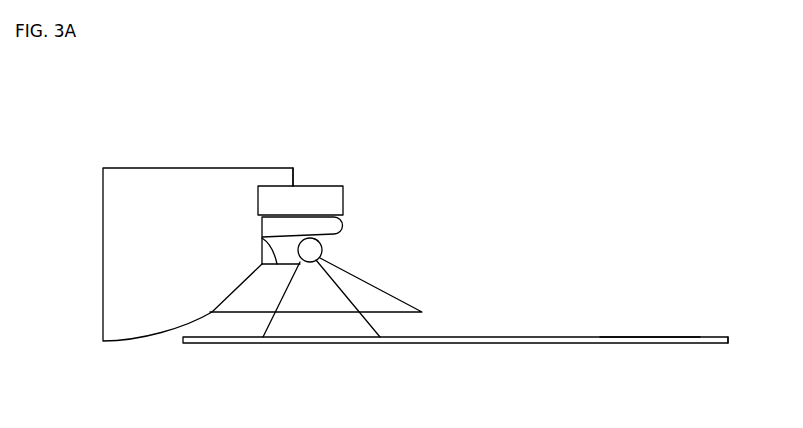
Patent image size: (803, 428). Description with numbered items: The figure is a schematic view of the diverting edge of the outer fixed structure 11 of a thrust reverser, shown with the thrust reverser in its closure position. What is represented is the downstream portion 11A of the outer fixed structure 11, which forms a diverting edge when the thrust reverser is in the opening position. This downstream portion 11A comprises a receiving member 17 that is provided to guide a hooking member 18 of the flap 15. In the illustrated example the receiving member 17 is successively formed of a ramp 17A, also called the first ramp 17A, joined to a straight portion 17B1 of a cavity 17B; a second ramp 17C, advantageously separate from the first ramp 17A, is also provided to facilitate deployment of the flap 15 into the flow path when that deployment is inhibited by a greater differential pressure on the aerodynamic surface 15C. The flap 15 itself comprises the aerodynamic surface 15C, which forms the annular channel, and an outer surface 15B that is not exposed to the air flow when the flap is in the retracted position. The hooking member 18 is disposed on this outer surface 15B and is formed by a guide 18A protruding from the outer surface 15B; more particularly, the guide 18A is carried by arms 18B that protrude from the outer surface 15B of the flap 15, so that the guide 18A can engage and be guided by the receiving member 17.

The outer fixed structure 11 is at (144, 150).
The downstream portion 11A is at (409, 194).
The flap 15 is at (585, 343).
The outer surface 15B is at (648, 335).
The aerodynamic surface 15C is at (687, 343).
The receiving member 17 is at (369, 215).
The ramp 17A is at (397, 298).
The cavity 17B is at (280, 216).
The straight portion 17B1 is at (262, 238).
The second ramp 17C is at (321, 234).
The hooking member 18 is at (338, 250).
The guide 18A is at (323, 242).
The arms 18B is at (270, 323).